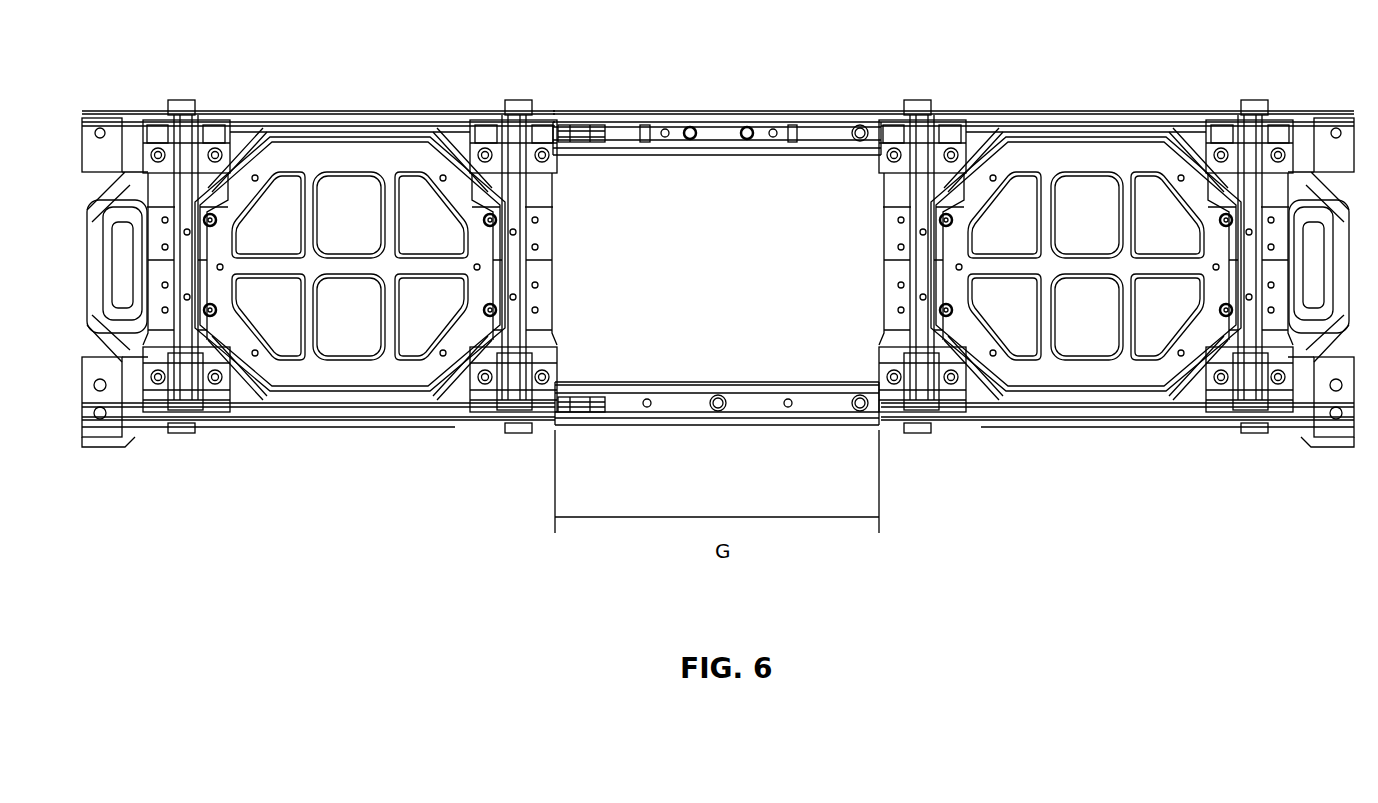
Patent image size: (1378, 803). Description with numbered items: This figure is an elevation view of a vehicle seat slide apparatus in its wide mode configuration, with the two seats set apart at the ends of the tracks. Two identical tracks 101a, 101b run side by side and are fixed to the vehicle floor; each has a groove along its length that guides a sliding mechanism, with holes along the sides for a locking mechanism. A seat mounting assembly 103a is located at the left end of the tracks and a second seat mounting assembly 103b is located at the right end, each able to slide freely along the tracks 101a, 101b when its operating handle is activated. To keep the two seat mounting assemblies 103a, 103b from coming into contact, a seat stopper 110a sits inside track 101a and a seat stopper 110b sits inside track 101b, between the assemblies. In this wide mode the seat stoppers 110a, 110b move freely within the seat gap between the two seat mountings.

The seat mounting assembly 103a is at (336, 150).
The seat mounting assembly 103b is at (1091, 152).
The track 101a is at (625, 111).
The track 101b is at (798, 426).
The seat stopper 110a is at (594, 136).
The seat stopper 110b is at (598, 396).